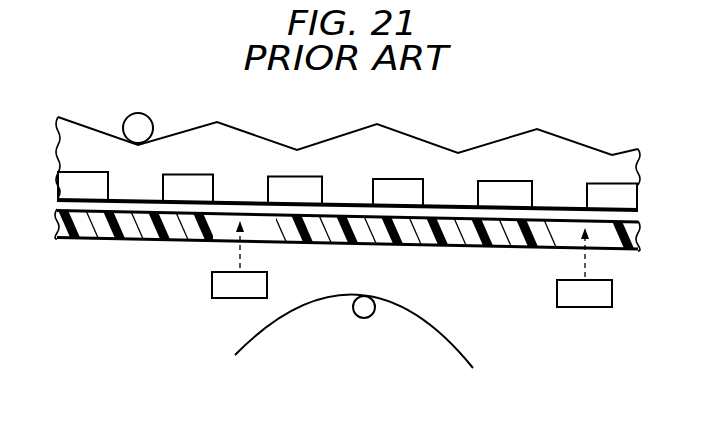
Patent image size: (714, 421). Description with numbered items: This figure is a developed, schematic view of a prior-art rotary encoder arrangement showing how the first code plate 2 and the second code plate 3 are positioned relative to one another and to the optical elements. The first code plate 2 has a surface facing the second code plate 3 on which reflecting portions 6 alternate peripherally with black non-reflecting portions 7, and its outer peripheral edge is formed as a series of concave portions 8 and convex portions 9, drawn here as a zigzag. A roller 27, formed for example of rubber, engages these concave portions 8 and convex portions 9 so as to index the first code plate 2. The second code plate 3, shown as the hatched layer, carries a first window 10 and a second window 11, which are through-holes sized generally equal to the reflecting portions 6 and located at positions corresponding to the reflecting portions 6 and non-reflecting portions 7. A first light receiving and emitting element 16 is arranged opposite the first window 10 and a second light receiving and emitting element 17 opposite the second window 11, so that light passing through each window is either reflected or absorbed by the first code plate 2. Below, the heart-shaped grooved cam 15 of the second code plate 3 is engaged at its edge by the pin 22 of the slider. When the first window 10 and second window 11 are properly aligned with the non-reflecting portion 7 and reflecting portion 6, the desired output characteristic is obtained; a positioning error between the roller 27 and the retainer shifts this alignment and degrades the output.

The first code plate 2 is at (58, 141).
The second code plate 3 is at (57, 224).
The reflecting portions 6 is at (177, 195).
The non-reflecting portions 7 is at (262, 187).
The concave portions 8 is at (297, 149).
The convex portions 9 is at (217, 121).
The first window 10 is at (222, 236).
The second window 11 is at (568, 243).
The grooved cam 15 is at (433, 331).
The first light receiving and emitting element 16 is at (220, 299).
The second light receiving and emitting element 17 is at (583, 308).
The pin 22 is at (365, 318).
The roller 27 is at (143, 113).